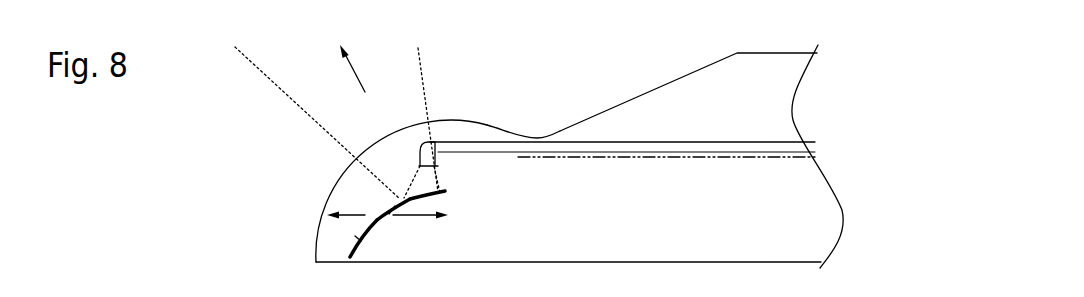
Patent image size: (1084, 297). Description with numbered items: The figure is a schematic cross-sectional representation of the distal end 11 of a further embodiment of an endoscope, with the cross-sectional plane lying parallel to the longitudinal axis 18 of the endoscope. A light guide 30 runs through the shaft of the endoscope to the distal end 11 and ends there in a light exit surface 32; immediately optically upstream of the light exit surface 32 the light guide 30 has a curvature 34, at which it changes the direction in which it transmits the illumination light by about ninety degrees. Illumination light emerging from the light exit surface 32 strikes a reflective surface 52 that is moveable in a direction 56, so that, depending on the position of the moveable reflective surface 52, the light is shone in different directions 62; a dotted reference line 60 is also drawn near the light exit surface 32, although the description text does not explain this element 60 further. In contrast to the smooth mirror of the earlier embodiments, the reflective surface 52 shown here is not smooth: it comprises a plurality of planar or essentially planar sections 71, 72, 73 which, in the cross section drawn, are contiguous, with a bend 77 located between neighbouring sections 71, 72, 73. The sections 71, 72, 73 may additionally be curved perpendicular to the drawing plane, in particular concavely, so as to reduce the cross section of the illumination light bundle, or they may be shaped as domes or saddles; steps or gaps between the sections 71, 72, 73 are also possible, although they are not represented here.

The distal end 11 is at (226, 87).
The longitudinal axis 18 is at (580, 156).
The light guide 30 is at (640, 145).
The light exit surface 32 is at (428, 162).
The curvature 34 is at (422, 147).
The reflective surface 52 is at (445, 193).
The direction 56 is at (365, 215).
The reference line 60 is at (423, 60).
The directions 62 is at (353, 72).
The section 71 is at (358, 238).
The section 72 is at (392, 210).
The section 73 is at (425, 195).
The bend 77 is at (360, 227).